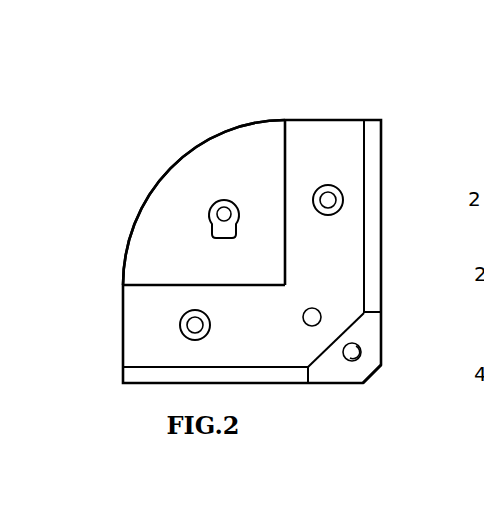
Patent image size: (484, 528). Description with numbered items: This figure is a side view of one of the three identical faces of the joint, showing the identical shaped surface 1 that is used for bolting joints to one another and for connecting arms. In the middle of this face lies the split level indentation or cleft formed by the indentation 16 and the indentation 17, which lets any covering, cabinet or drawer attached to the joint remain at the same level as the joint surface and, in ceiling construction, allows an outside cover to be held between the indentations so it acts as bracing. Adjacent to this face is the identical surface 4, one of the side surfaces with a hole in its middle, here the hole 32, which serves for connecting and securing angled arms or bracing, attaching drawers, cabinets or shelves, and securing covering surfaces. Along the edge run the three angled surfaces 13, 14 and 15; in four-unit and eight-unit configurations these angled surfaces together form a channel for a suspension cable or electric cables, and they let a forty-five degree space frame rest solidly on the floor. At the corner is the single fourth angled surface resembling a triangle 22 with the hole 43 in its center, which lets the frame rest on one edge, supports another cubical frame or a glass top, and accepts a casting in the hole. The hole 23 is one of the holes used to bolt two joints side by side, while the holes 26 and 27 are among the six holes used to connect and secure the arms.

The identical shaped surface 1 is at (148, 322).
The identical surface with center hole 4 is at (235, 156).
The angled surface 13 is at (375, 178).
The angled surface 14 is at (200, 373).
The angled surface 15 is at (377, 371).
The split level indentation 16 is at (282, 200).
The split level indentation 17 is at (200, 283).
The triangular angled surface 22 is at (363, 335).
The bolting hole 23 is at (315, 326).
The arm securing hole 26 is at (320, 188).
The arm securing hole 27 is at (181, 332).
The bracing hole 32 is at (215, 203).
The center hole 43 is at (361, 352).